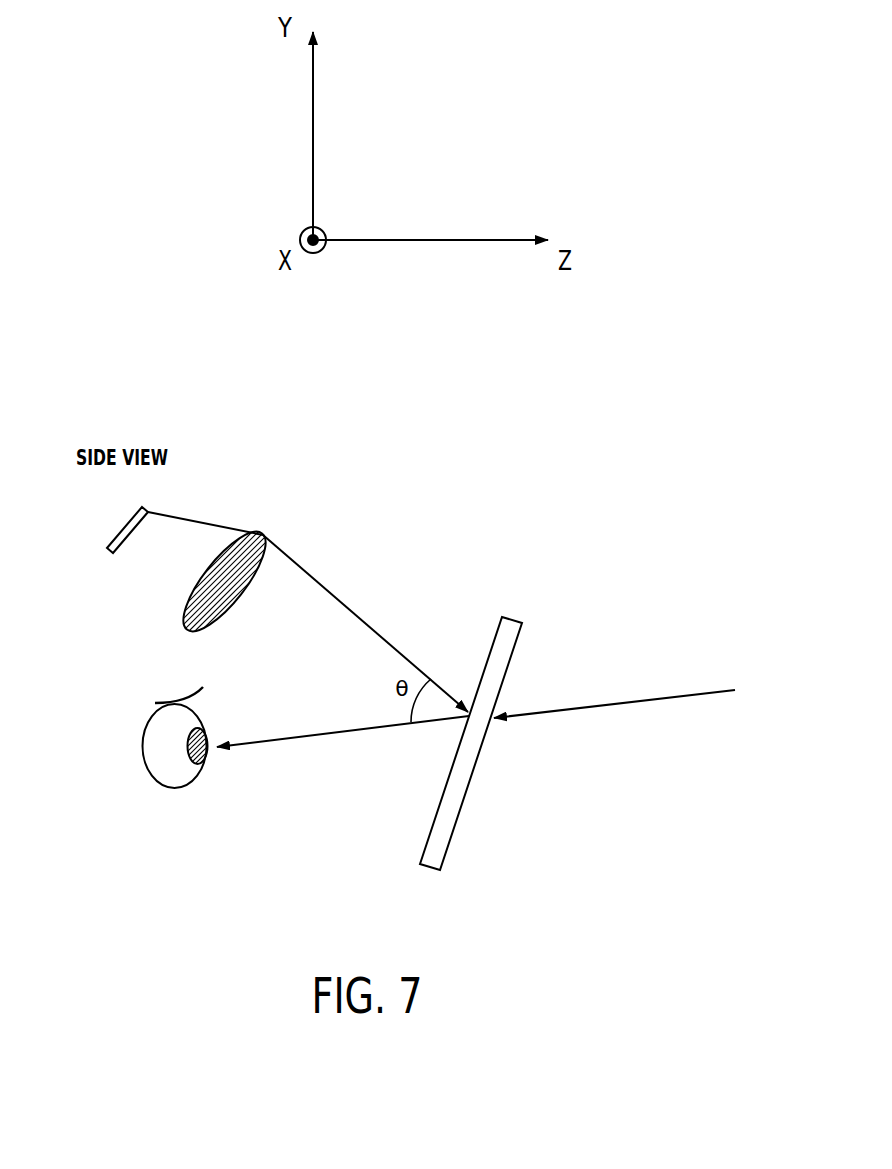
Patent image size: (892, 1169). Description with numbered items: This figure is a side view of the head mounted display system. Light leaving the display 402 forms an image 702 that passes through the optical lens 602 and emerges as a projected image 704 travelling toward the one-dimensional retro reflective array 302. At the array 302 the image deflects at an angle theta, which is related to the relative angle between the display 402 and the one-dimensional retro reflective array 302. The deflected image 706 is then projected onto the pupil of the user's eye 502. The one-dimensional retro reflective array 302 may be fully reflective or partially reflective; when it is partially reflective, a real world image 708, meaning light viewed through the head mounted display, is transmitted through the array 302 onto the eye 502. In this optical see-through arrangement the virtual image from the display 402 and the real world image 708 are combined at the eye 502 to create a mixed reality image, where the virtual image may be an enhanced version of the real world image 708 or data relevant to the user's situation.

The one-dimensional retro reflective array 302 is at (499, 613).
The display 402 is at (104, 550).
The eye 502 is at (199, 769).
The optical lens 602 is at (183, 626).
The image 702 is at (203, 520).
The image 704 is at (368, 623).
The deflected image 706 is at (318, 731).
The real world image 708 is at (683, 694).